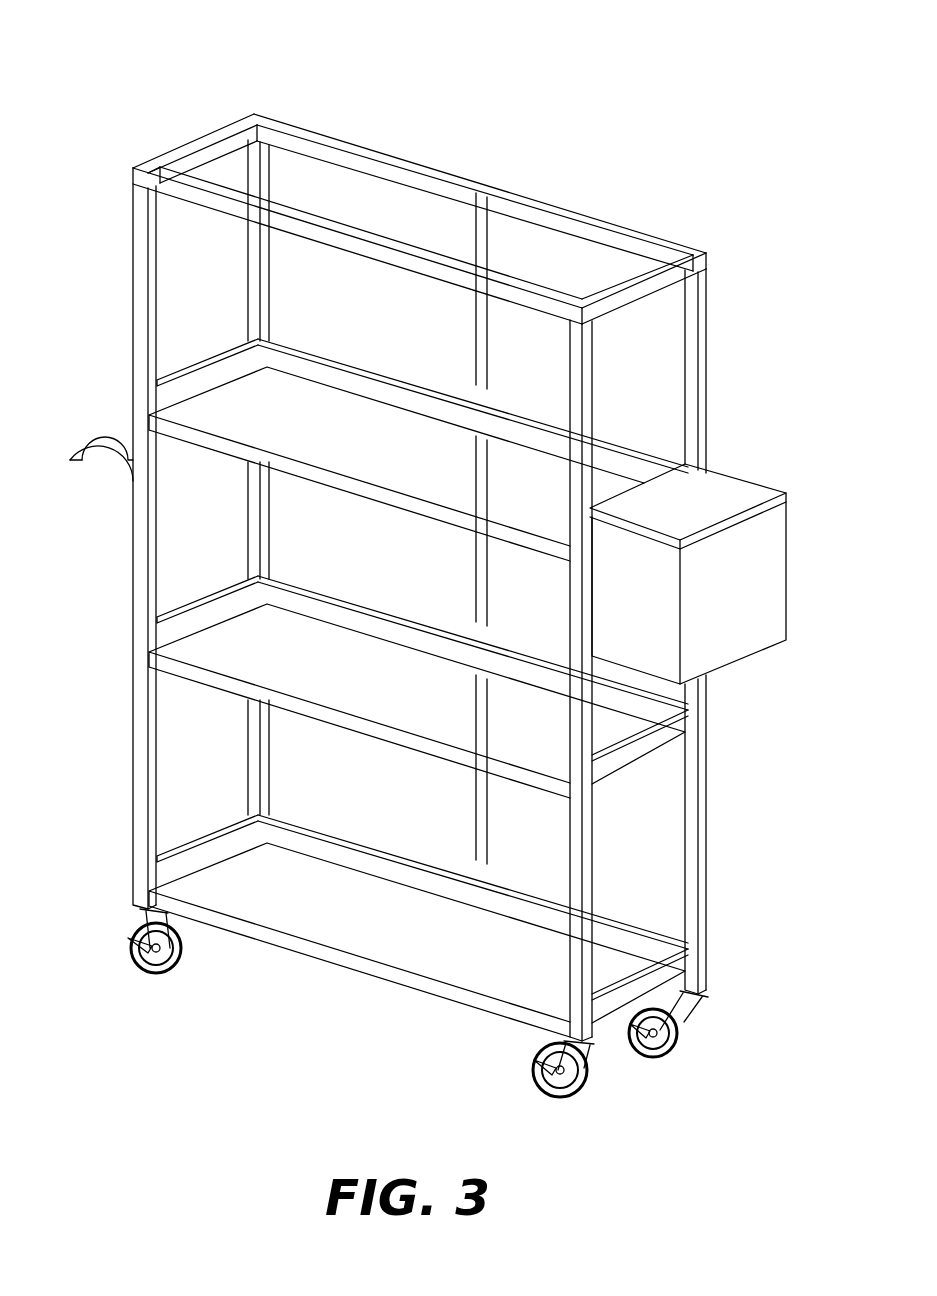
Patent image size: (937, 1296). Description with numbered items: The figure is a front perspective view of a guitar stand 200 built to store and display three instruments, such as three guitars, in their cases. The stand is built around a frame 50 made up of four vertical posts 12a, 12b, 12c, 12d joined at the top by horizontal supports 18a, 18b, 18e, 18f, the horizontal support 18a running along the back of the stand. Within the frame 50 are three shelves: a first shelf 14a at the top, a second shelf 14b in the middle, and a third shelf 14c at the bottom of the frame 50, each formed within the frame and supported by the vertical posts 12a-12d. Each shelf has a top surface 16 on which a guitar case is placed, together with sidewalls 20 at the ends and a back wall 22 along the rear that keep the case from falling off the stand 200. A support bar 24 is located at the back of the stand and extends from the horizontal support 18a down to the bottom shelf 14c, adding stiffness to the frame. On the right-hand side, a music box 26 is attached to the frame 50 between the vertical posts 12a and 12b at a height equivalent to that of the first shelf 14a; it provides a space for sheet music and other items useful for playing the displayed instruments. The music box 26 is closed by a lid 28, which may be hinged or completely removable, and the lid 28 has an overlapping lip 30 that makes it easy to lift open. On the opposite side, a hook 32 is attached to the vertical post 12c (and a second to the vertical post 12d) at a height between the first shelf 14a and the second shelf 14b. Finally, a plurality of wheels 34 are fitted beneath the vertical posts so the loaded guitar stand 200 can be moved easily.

The guitar stand 200 is at (107, 74).
The frame 50 is at (326, 75).
The vertical post 12a is at (590, 360).
The vertical post 12b is at (704, 300).
The vertical post 12c is at (136, 255).
The vertical post 12d is at (268, 160).
The first shelf 14a is at (230, 423).
The second shelf 14b is at (230, 660).
The third shelf 14c is at (288, 917).
The top surface 16 is at (355, 468).
The horizontal support 18a is at (438, 172).
The horizontal support 18b is at (372, 254).
The horizontal support 18e is at (205, 145).
The horizontal support 18f is at (712, 250).
The sidewalls 20 is at (224, 350).
The back wall 22 is at (372, 360).
The support bar 24 is at (480, 238).
The music box 26 is at (778, 560).
The lid 28 is at (728, 470).
The overlapping lip 30 is at (782, 497).
The hooks 32 is at (72, 440).
The wheels 34 is at (135, 940).